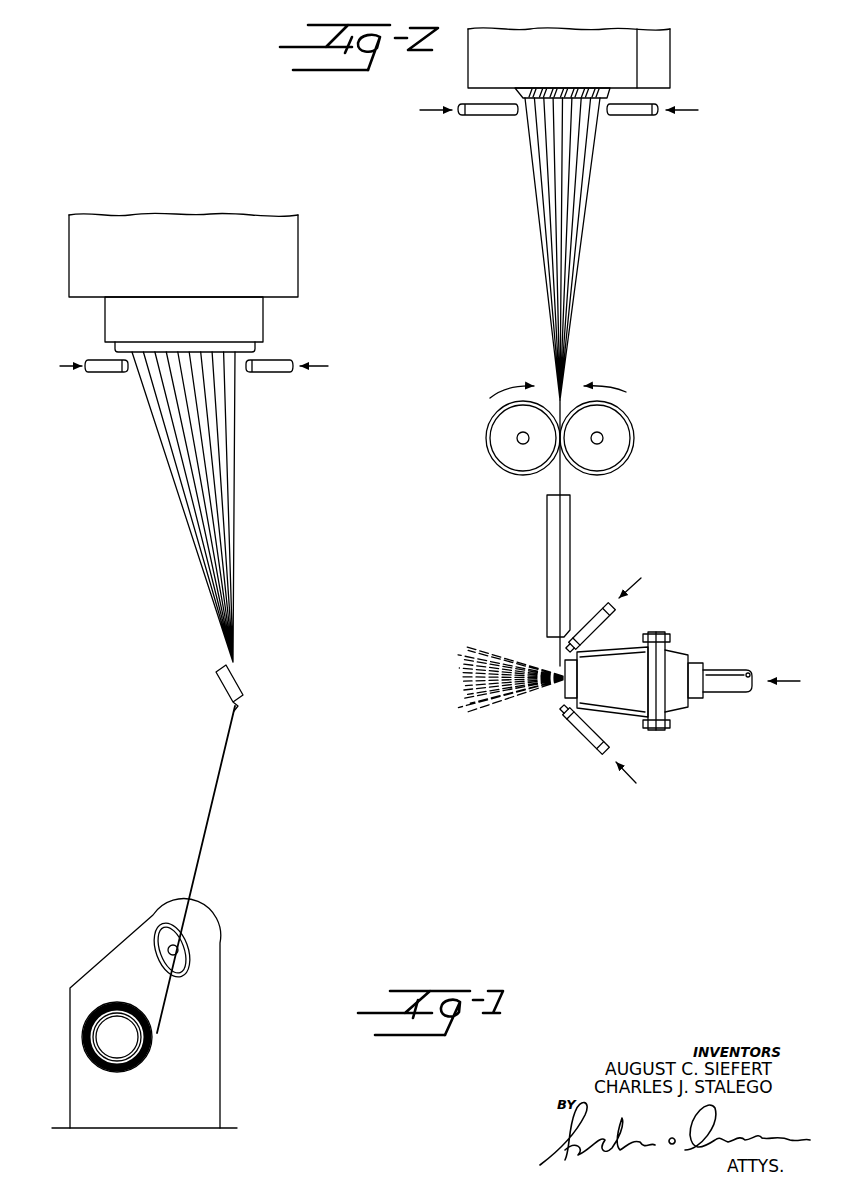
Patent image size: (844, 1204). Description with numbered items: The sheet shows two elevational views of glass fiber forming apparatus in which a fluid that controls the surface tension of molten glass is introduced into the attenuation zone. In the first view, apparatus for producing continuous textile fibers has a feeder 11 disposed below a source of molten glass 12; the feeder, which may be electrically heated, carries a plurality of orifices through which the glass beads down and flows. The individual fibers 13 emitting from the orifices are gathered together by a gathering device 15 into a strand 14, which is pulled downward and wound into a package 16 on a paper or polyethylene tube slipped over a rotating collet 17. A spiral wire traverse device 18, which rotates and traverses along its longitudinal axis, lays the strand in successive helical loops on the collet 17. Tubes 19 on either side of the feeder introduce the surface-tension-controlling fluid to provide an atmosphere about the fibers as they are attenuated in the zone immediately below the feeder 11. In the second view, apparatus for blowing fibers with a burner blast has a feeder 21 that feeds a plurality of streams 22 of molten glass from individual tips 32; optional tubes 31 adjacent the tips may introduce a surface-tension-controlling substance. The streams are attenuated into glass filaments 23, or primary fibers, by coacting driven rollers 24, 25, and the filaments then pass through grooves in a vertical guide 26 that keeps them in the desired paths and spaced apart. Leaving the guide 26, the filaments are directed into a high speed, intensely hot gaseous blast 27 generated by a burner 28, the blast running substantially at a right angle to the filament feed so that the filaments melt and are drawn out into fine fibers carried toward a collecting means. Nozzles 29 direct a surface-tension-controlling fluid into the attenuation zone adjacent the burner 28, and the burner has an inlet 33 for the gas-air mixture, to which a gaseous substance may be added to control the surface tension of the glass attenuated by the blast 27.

In FIG. 1, the feeder 11 is at (258, 349).
In FIG. 1, the source of molten glass 12 is at (290, 262).
In FIG. 1, the fibers 13 is at (218, 462).
In FIG. 1, the strand 14 is at (224, 793).
In FIG. 1, the gathering device 15 is at (219, 682).
In FIG. 1, the package 16 is at (106, 1003).
In FIG. 1, the collet 17 is at (124, 1052).
In FIG. 1, the spiral wire traverse device 18 is at (158, 935).
In FIG. 1, the tubes 19 is at (110, 368).
In FIG. 2, the feeder 21 is at (646, 96).
In FIG. 2, the streams 22 is at (578, 112).
In FIG. 2, the glass filaments 23 is at (569, 262).
In FIG. 2, the roller 24 is at (505, 455).
In FIG. 2, the roller 25 is at (615, 455).
In FIG. 2, the vertical guide 26 is at (547, 545).
In FIG. 2, the gaseous blast 27 is at (500, 700).
In FIG. 2, the burner 28 is at (675, 660).
In FIG. 2, the nozzles 29 is at (615, 620).
In FIG. 2, the tubes 31 is at (478, 110).
In FIG. 2, the tips 32 is at (538, 88).
In FIG. 2, the inlet 33 is at (725, 686).